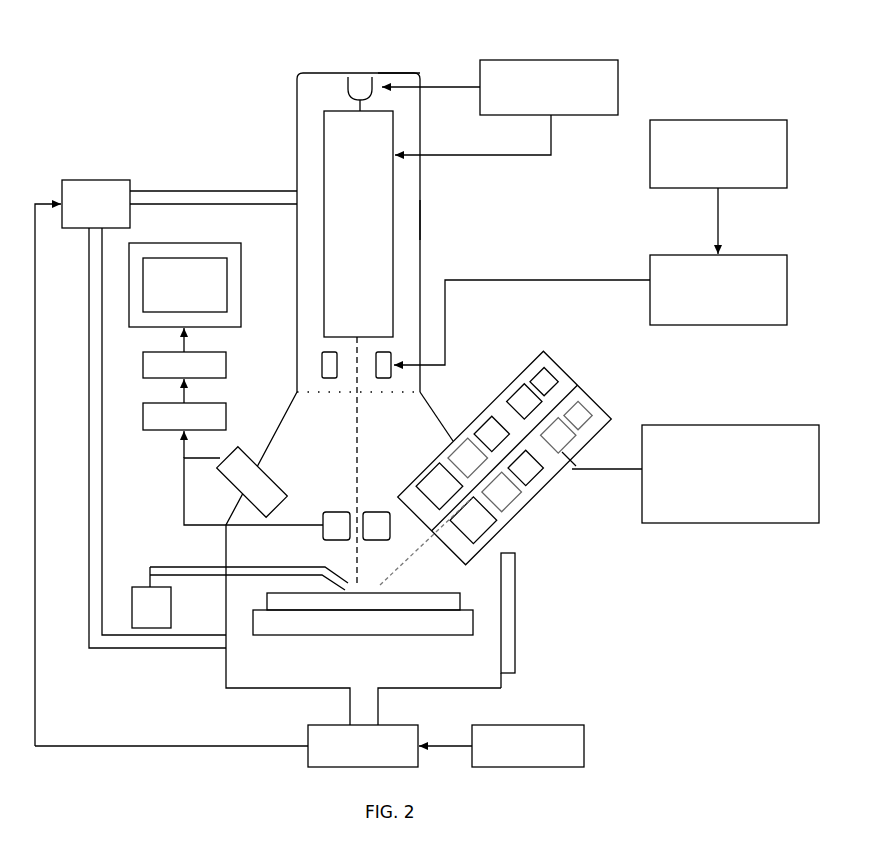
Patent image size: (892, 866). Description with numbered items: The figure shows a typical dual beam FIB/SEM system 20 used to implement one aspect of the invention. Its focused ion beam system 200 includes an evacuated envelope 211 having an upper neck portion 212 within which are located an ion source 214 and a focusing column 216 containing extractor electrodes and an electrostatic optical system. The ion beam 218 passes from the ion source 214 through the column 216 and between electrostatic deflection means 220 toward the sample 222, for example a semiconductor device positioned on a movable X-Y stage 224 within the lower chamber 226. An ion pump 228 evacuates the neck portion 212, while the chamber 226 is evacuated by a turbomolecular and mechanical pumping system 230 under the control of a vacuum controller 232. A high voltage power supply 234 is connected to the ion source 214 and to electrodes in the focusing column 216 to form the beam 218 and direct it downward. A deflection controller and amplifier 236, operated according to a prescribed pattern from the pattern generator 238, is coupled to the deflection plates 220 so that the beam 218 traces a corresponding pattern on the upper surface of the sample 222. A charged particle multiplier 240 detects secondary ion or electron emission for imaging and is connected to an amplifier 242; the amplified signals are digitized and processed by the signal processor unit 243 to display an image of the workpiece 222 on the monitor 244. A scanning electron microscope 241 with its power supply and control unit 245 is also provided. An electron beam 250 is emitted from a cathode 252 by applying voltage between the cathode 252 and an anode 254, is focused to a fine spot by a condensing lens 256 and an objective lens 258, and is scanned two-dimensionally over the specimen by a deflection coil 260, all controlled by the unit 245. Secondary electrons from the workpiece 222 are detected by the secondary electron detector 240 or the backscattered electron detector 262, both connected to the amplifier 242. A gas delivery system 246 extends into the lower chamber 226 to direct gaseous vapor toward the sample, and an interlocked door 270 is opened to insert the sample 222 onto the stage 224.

The dual beam FIB/SEM system 20 is at (98, 52).
The focused ion beam system 200 is at (394, 64).
The evacuated envelope 211 is at (421, 212).
The upper neck portion 212 is at (297, 92).
The ion source 214 is at (355, 75).
The focusing column 216 is at (330, 170).
The ion beam 218 is at (357, 430).
The electrostatic deflection means 220 is at (322, 357).
The sample 222 is at (395, 593).
The movable X-Y stage 224 is at (398, 636).
The lower chamber 226 is at (240, 608).
The ion pump 228 is at (95, 180).
The turbomolecular and mechanical pumping system 230 is at (342, 726).
The vacuum controller 232 is at (530, 725).
The high voltage power supply 234 is at (618, 83).
The deflection controller and amplifier 236 is at (788, 276).
The pattern generator 238 is at (774, 150).
The charged particle multiplier 240 is at (258, 475).
The scanning electron microscope 241 is at (613, 417).
The amplifier 242 is at (233, 452).
The signal processor unit 243 is at (184, 353).
The monitor 244 is at (185, 285).
The power supply and control unit 245 is at (738, 524).
The gas delivery system 246 is at (178, 566).
The electron beam 250 is at (428, 537).
The cathode 252 is at (556, 400).
The anode 254 is at (577, 461).
The condensing lens 256 is at (528, 470).
The objective lens 258 is at (432, 470).
The deflection coil 260 is at (510, 500).
The backscattered electron detector 262 is at (347, 539).
The door 270 is at (512, 612).